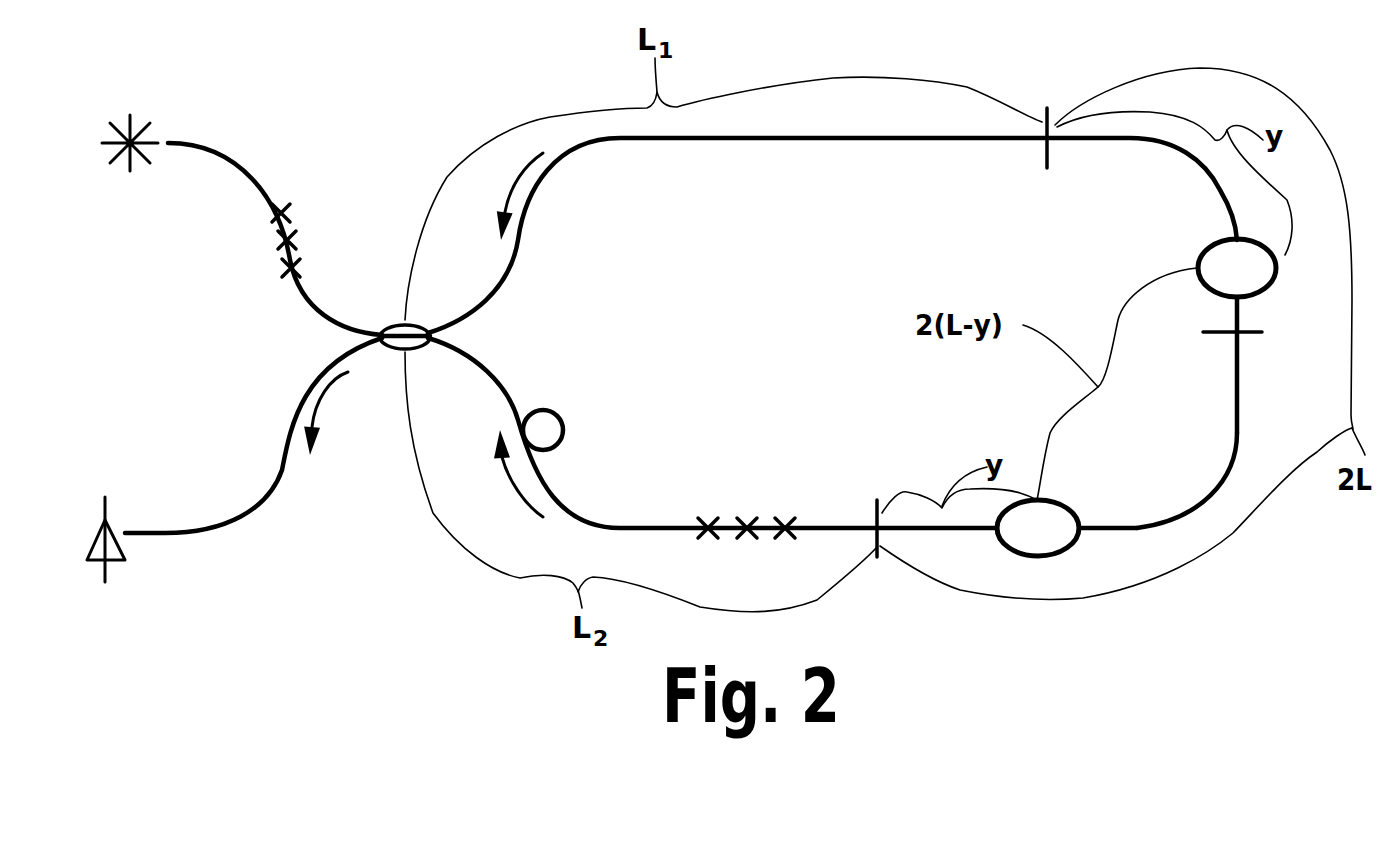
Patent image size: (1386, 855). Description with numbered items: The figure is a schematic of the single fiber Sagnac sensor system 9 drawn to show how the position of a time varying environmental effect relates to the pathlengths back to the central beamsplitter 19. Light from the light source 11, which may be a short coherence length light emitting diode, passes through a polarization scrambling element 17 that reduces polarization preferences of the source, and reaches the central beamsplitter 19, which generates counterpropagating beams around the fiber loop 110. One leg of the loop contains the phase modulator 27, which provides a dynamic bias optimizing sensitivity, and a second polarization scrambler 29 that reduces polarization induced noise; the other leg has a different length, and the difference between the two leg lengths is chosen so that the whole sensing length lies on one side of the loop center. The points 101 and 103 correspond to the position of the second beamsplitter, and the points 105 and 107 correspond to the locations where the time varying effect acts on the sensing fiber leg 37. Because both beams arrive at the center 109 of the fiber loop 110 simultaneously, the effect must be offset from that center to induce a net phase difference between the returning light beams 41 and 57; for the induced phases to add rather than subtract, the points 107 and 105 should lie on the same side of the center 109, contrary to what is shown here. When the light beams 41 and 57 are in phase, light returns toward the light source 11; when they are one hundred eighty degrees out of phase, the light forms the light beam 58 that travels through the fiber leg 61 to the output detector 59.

The single fiber Sagnac sensor system 9 is at (262, 326).
The light source 11 is at (122, 167).
The polarization scrambling element 17 is at (293, 245).
The central beamsplitter 19 is at (395, 322).
The phase modulator 27 is at (562, 420).
The polarization scrambler 29 is at (748, 518).
The fiber leg 37 is at (1238, 443).
The light beam 41 is at (510, 192).
The light beam 57 is at (512, 487).
The light beam 58 is at (325, 397).
The output detector 59 is at (120, 562).
The fiber leg 61 is at (247, 513).
The point 101 is at (880, 520).
The point 103 is at (1047, 165).
The point 105 is at (1055, 500).
The point 107 is at (1197, 267).
The center 109 is at (1255, 334).
The fiber loop 110 is at (1237, 400).